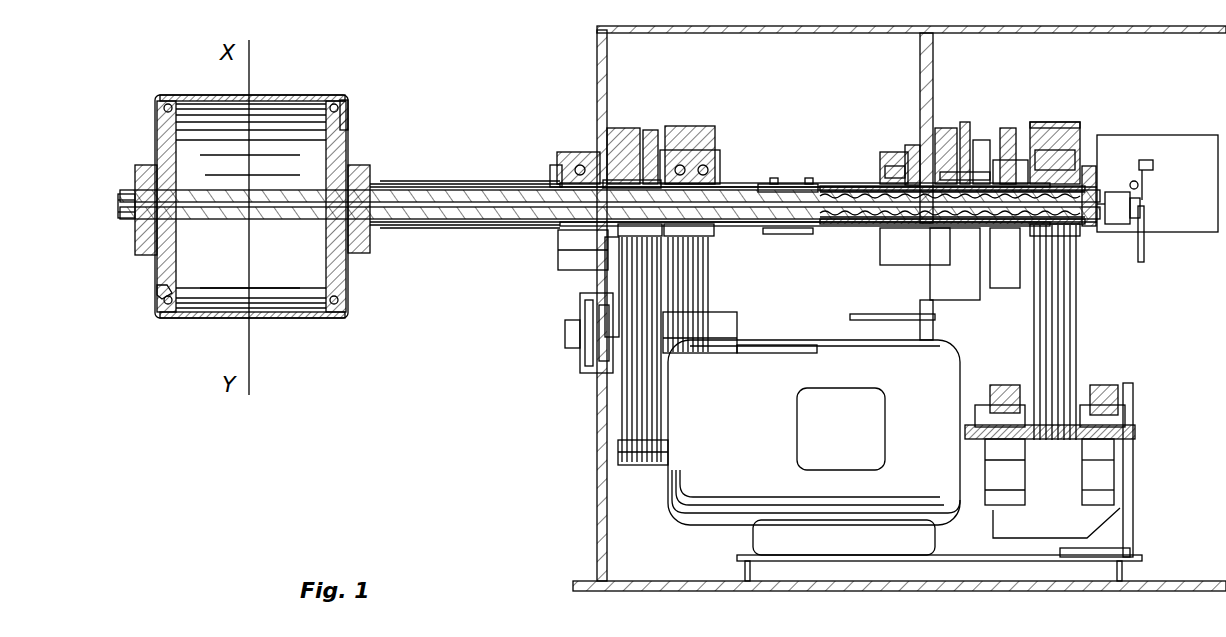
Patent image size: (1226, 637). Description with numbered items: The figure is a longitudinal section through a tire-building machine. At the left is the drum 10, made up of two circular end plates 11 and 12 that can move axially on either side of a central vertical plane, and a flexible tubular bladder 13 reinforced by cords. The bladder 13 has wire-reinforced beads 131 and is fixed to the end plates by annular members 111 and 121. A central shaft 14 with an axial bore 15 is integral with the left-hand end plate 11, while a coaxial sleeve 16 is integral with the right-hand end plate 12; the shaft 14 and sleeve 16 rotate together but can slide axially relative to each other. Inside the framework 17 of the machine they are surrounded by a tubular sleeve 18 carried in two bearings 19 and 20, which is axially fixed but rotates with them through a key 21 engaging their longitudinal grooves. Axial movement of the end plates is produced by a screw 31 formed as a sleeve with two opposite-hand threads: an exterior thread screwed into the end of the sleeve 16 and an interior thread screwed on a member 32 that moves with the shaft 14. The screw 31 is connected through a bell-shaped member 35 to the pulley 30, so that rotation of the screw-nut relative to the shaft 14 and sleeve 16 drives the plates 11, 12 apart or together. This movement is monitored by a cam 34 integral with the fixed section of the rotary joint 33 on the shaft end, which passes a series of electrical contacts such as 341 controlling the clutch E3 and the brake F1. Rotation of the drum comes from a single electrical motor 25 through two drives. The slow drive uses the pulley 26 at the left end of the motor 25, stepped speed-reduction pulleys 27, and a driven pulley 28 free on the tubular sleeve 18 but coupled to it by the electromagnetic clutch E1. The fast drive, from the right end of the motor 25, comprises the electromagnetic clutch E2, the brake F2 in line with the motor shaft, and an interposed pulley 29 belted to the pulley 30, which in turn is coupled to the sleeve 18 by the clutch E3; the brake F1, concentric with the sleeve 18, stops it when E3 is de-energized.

The drum 10 is at (188, 331).
The end plate 11 is at (140, 235).
The annular member 111 is at (158, 296).
The end plate 12 is at (336, 258).
The annular member 121 is at (350, 113).
The flexible bladder 13 is at (278, 318).
The beads 131 is at (332, 103).
The central shaft 14 is at (432, 222).
The axial bore 15 is at (490, 224).
The coaxial sleeve 16 is at (432, 186).
The framework 17 is at (598, 415).
The tubular sleeve 18 is at (832, 186).
The bearing 19 is at (558, 170).
The bearing 20 is at (900, 160).
The key 21 is at (788, 184).
The electrical motor 25 is at (778, 460).
The pulley 26 is at (620, 455).
The stepped intermediate speed reduction pulleys 27 is at (640, 340).
The driven pulley 28 is at (690, 126).
The pulley 29 is at (1043, 475).
The pulley 30 is at (1075, 126).
The screw 31 is at (1096, 192).
The member 32 is at (878, 226).
The rotary joint 33 is at (1118, 225).
The cam 34 is at (1138, 186).
The electrical contact 341 is at (1147, 160).
The bell-shaped member 35 is at (1092, 180).
The electromagnetic clutch E1 is at (622, 130).
The electromagnetic clutch E2 is at (1000, 385).
The electromagnetic clutch E3 is at (1010, 130).
The electromagnetic brake F1 is at (960, 140).
The electromagnetic brake F2 is at (1105, 390).